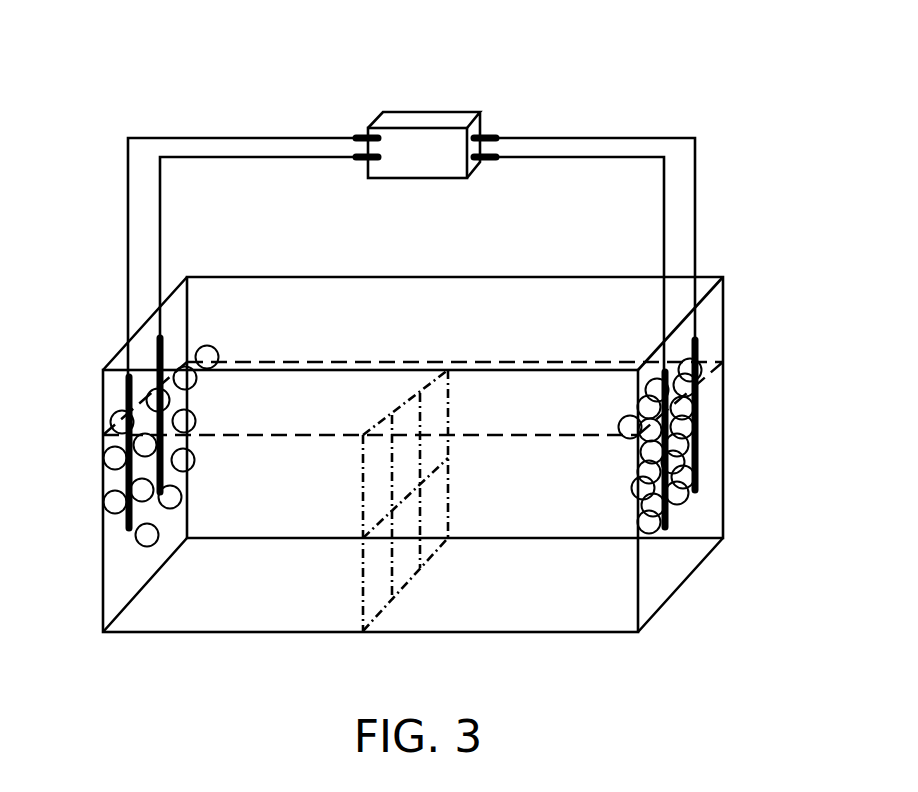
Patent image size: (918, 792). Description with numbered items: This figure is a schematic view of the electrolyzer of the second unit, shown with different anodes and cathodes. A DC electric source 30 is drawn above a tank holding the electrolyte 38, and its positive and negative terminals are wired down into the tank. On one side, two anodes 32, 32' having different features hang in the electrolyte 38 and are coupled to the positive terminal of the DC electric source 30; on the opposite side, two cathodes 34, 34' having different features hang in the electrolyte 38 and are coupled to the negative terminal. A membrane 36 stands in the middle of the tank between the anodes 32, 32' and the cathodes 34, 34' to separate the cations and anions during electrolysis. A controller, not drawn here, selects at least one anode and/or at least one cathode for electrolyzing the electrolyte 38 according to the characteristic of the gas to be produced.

The DC electric source 30 is at (433, 120).
The anode 32 is at (96, 415).
The anode 32' is at (81, 458).
The cathode 34 is at (743, 415).
The cathode 34' is at (732, 453).
The membrane 36 is at (412, 565).
The electrolyte 38 is at (590, 607).